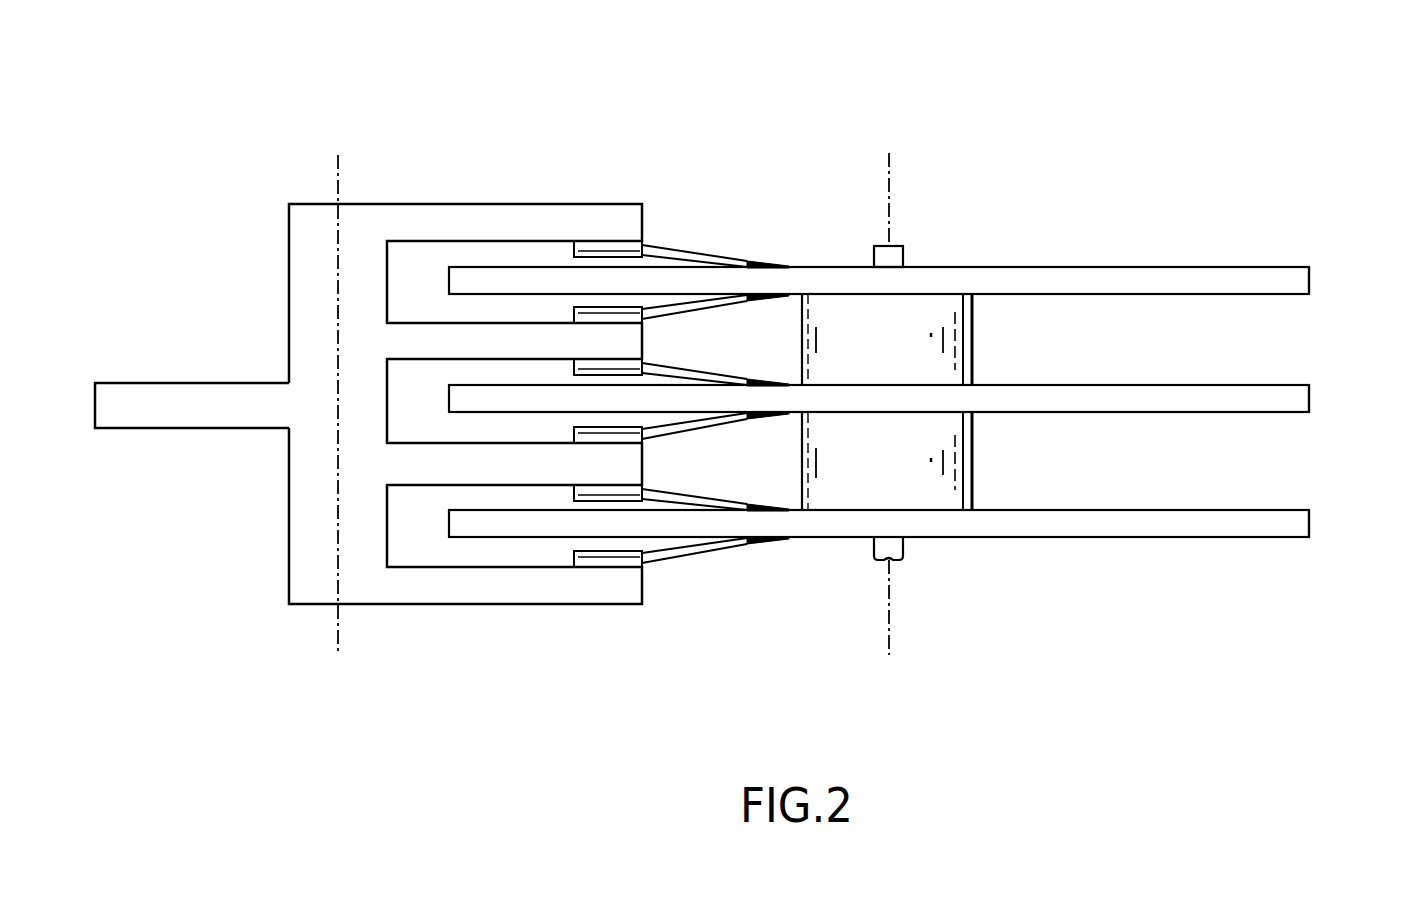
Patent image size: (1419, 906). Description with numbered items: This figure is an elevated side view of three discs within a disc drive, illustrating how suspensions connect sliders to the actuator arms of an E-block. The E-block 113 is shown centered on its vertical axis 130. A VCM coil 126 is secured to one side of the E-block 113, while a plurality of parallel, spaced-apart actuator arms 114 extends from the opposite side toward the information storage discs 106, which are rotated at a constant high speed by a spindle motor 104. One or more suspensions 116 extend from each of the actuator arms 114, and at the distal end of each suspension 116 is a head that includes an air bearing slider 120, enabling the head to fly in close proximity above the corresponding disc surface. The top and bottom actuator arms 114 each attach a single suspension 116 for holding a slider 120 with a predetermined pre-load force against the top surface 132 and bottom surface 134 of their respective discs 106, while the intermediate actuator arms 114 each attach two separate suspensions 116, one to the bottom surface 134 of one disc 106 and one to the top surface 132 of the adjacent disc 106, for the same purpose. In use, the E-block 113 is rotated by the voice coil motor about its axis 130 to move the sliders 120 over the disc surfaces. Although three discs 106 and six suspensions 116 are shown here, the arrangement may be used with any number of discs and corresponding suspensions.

The E-block 113 is at (391, 113).
The actuator arms 114 is at (450, 217).
The VCM coil 126 is at (180, 383).
The vertical axis 130 is at (340, 180).
The top surface 132 is at (1122, 267).
The bottom surface 134 is at (1190, 295).
The information storage discs 106 is at (1309, 278).
The suspensions 116 is at (688, 252).
The air bearing slider 120 is at (788, 268).
The spindle motor 104 is at (975, 357).